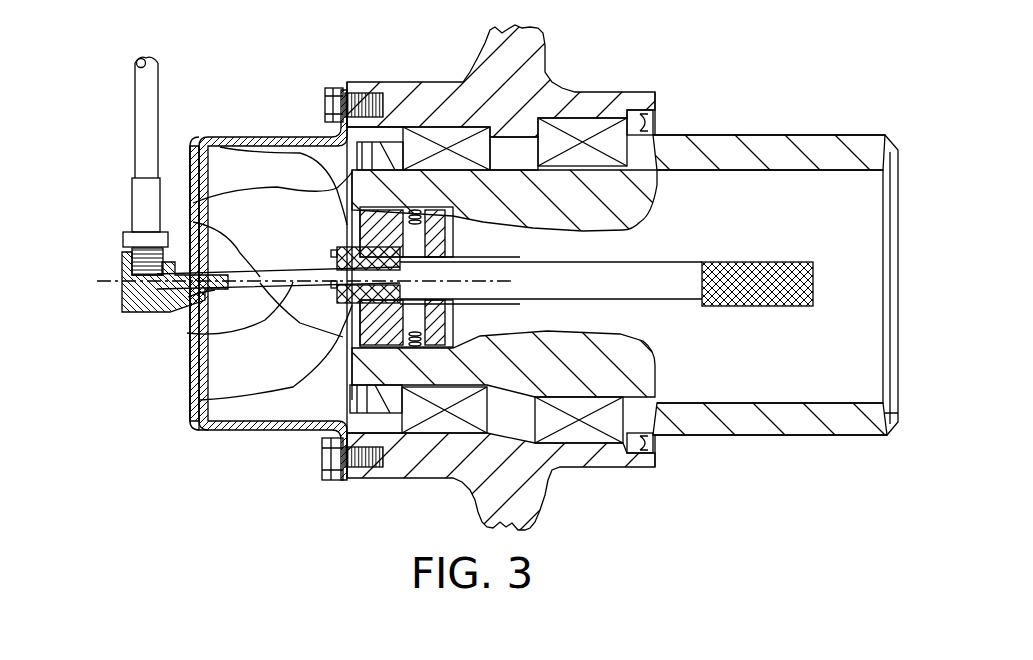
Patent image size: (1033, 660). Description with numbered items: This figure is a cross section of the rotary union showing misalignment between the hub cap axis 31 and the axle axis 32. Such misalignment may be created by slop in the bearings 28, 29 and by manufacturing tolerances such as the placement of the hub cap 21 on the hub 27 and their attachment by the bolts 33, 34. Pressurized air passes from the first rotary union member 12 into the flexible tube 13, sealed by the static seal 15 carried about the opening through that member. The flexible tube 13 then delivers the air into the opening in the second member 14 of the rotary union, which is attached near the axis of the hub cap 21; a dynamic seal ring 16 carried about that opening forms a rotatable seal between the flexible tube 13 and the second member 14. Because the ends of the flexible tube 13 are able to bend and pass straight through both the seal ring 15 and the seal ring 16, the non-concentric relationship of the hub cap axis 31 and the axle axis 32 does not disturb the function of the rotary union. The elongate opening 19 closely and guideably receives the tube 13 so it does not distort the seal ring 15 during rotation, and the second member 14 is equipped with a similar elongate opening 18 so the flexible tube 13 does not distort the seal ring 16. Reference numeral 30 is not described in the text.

The first rotary union member 12 is at (203, 428).
The flexible tube 13 is at (193, 222).
The second member 14 is at (122, 258).
The static seal 15 is at (207, 137).
The dynamic seal ring 16 is at (122, 297).
The elongate opening 18 is at (125, 240).
The elongate opening 19 is at (193, 203).
The hub cap 21 is at (187, 412).
The hub 27 is at (563, 85).
The bearing 28 is at (653, 102).
The bearing 29 is at (445, 126).
The lower bearing 30 is at (387, 400).
The hub cap axis 31 is at (188, 297).
The axle axis 32 is at (187, 333).
The bolt 33 is at (327, 87).
The bolt 34 is at (322, 457).